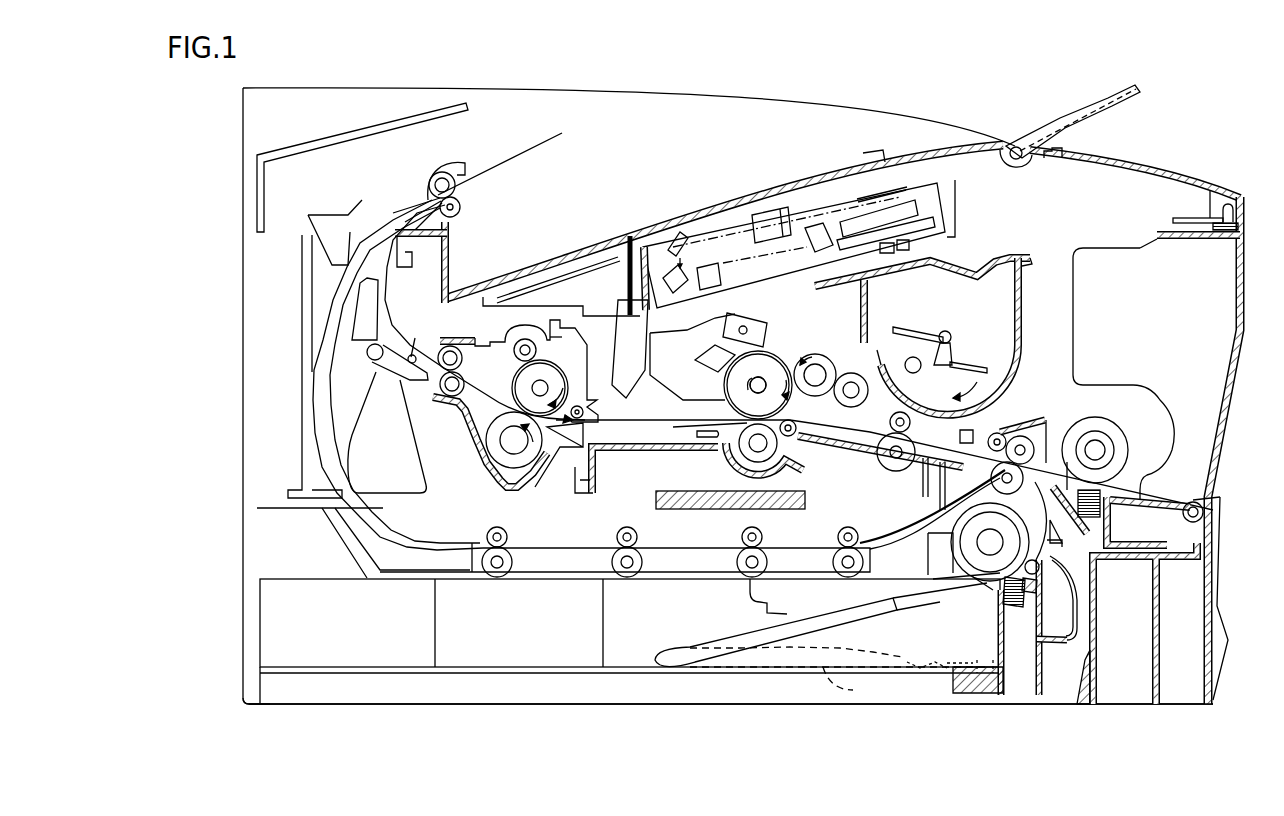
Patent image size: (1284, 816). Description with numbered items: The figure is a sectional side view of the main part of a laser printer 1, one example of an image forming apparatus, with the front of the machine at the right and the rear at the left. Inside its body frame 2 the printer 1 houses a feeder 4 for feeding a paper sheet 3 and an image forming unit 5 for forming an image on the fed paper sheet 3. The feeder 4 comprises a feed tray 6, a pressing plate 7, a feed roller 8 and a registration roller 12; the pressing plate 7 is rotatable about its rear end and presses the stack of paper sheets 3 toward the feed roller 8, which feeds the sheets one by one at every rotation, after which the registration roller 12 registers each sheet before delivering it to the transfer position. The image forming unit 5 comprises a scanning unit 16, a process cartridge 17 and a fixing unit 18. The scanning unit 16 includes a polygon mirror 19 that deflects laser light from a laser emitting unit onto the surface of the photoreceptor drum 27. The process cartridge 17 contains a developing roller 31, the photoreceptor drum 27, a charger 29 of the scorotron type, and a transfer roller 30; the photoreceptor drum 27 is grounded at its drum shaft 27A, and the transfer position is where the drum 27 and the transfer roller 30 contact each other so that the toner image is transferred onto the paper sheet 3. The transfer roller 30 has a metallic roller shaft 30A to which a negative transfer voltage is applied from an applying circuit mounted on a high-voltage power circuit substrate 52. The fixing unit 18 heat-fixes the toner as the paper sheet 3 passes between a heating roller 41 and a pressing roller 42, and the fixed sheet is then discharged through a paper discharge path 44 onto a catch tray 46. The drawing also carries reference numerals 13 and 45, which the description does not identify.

The printer 1 is at (750, 744).
The body frame 2 is at (243, 418).
The paper sheet 3 is at (523, 158).
The feeder 4 is at (313, 572).
The image forming unit 5 is at (657, 452).
The feed tray 6 is at (258, 620).
The pressing plate 7 is at (805, 613).
The feed roller 8 is at (952, 532).
The registration roller 12 is at (885, 445).
The sheet pickup section 13 is at (999, 611).
The scanning unit 16 is at (750, 204).
The process cartridge 17 is at (984, 247).
The fixing unit 18 is at (572, 422).
The polygon mirror 19 is at (907, 197).
The photoreceptor drum 27 is at (730, 412).
The drum shaft 27A is at (753, 395).
The charger 29 is at (758, 385).
The transfer roller 30 is at (785, 509).
The roller shaft 30A is at (751, 452).
The developing roller 31 is at (835, 364).
The heating roller 41 is at (565, 376).
The pressing roller 42 is at (523, 488).
The paper discharge path 44 is at (387, 305).
The discharge roller 45 is at (430, 182).
The catch tray 46 is at (583, 245).
The high-voltage power circuit substrate 52 is at (682, 509).